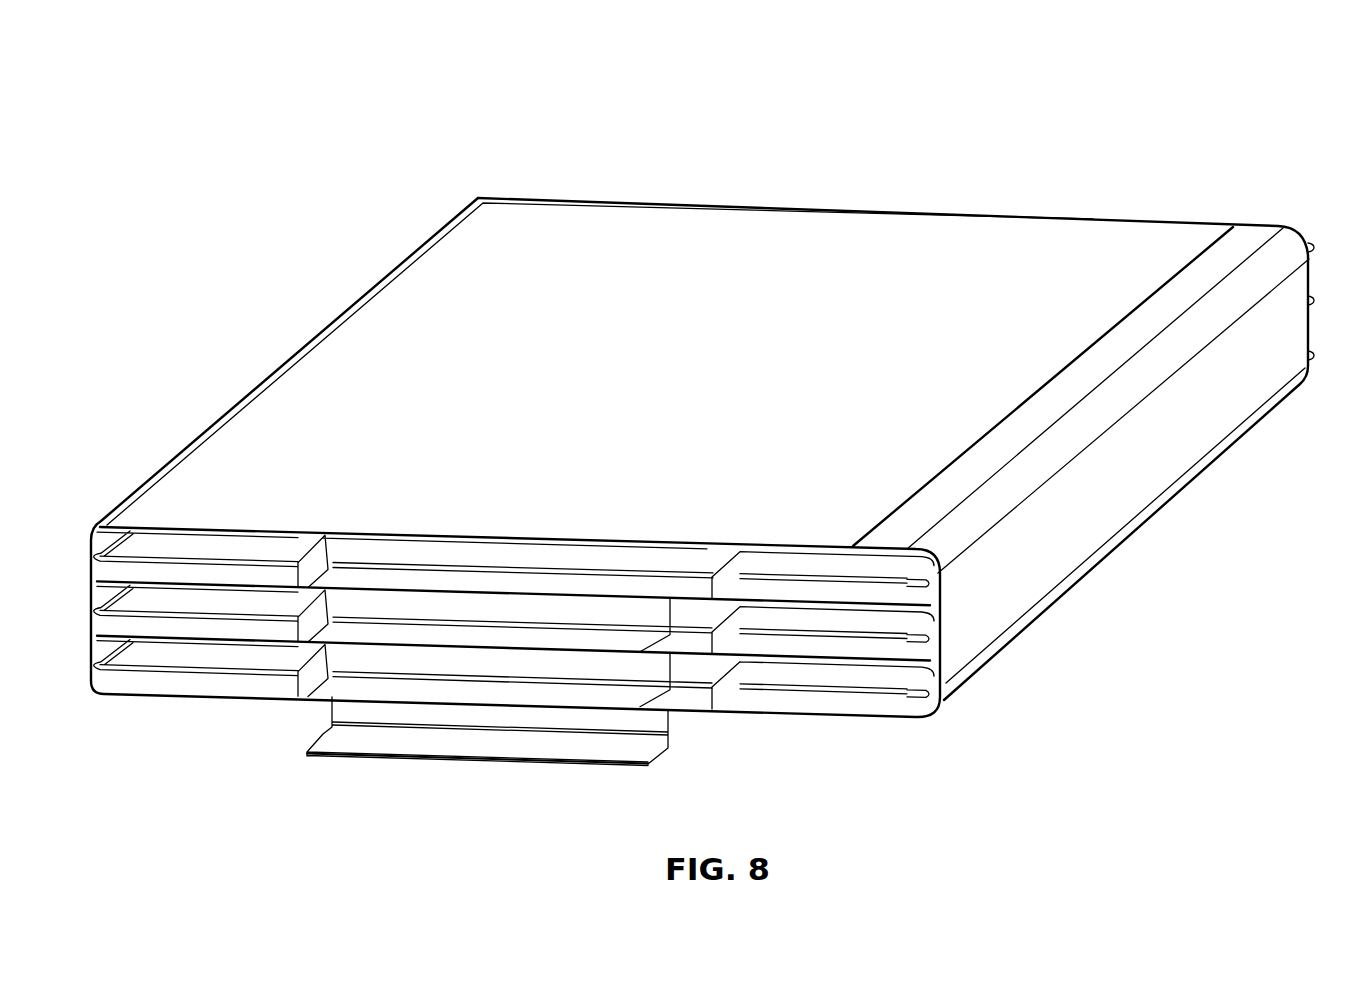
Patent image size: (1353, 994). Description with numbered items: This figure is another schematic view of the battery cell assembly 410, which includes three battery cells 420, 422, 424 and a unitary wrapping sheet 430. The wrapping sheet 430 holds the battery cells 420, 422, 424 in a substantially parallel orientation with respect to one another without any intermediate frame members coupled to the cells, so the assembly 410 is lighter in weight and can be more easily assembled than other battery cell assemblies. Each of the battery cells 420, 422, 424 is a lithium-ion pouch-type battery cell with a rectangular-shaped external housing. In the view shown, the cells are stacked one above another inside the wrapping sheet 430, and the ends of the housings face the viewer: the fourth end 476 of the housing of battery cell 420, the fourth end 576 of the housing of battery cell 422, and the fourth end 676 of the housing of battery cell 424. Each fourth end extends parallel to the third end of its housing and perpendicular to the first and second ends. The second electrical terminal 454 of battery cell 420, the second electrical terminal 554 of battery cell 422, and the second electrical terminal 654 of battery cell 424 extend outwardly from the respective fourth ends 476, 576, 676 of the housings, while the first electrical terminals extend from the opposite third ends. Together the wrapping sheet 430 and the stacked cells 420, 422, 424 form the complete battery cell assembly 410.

The battery cell assembly 410 is at (942, 138).
The unitary wrapping sheet 430 is at (1097, 252).
The battery cell 420 is at (149, 653).
The battery cell 422 is at (177, 612).
The battery cell 424 is at (243, 551).
The second electrical terminal 454 is at (386, 741).
The second electrical terminal 554 is at (474, 694).
The second electrical terminal 654 is at (563, 645).
The fourth end 476 is at (753, 678).
The fourth end 576 is at (800, 631).
The fourth end 676 is at (862, 575).